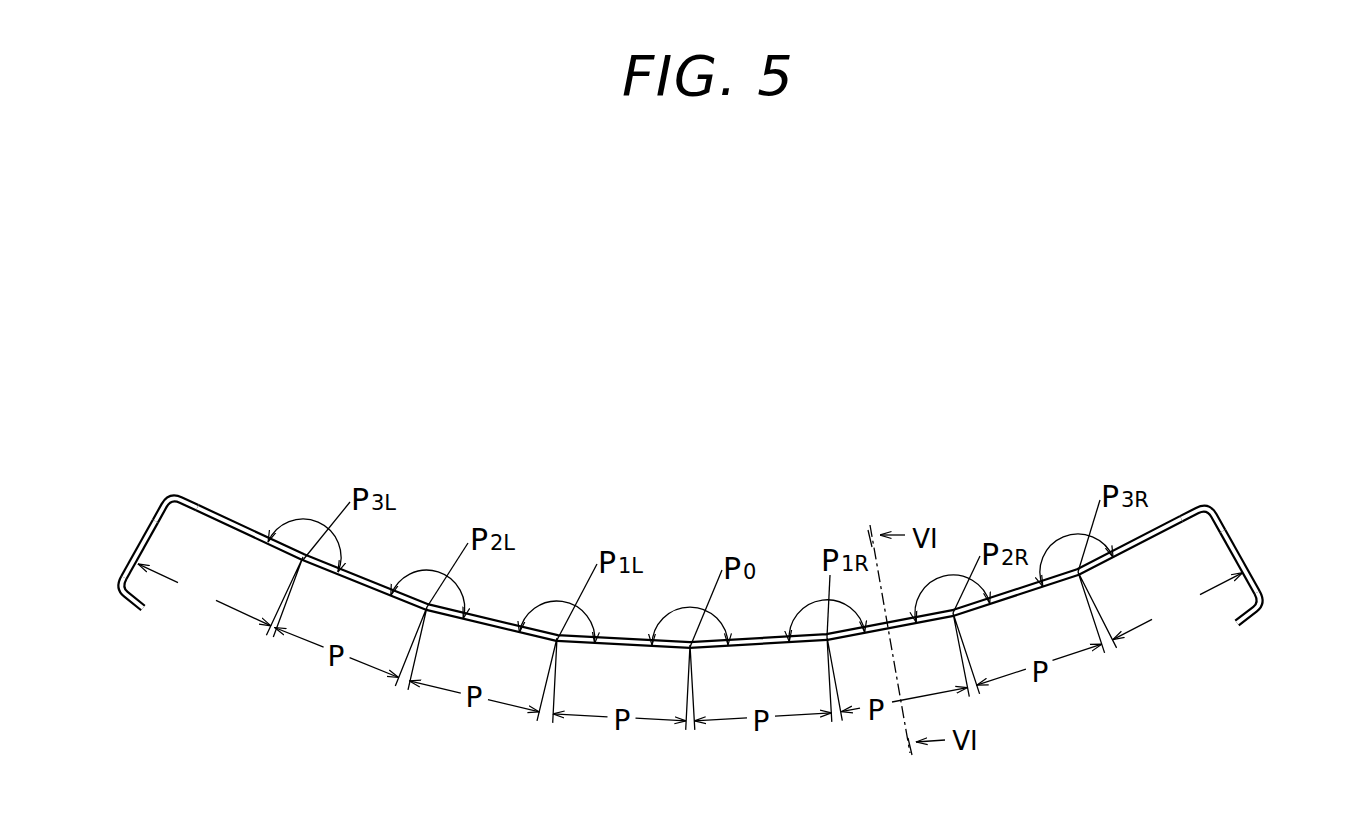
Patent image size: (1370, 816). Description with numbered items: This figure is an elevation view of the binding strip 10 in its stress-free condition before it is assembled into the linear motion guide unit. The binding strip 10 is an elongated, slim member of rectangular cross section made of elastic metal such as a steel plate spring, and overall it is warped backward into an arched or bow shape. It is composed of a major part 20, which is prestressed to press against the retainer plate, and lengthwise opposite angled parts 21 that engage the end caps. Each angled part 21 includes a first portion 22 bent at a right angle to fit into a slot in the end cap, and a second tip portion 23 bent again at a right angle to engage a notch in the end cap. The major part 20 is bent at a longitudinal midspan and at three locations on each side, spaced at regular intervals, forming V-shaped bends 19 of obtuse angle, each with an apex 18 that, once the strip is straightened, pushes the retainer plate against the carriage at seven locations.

The binding strip 10 is at (1177, 503).
The apex 18 is at (428, 610).
The bend 19 is at (303, 558).
The major part 20 is at (625, 642).
The angled part 21 is at (112, 565).
The first portion 22 is at (140, 537).
The second tip portion 23 is at (130, 607).